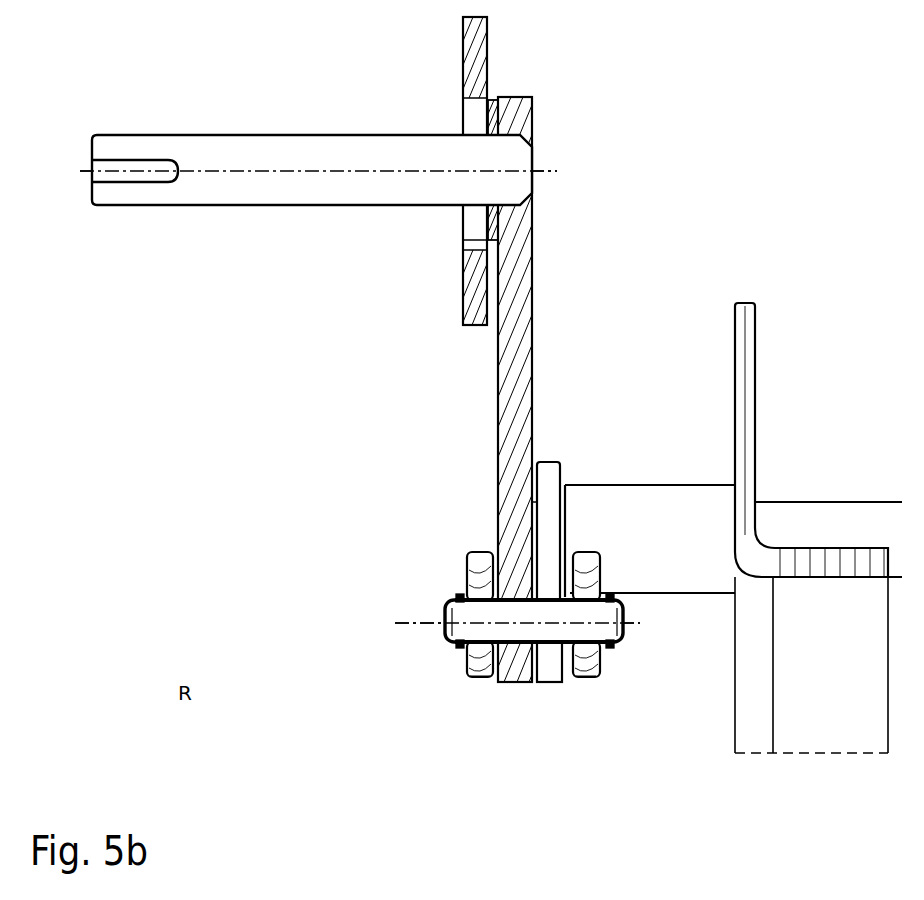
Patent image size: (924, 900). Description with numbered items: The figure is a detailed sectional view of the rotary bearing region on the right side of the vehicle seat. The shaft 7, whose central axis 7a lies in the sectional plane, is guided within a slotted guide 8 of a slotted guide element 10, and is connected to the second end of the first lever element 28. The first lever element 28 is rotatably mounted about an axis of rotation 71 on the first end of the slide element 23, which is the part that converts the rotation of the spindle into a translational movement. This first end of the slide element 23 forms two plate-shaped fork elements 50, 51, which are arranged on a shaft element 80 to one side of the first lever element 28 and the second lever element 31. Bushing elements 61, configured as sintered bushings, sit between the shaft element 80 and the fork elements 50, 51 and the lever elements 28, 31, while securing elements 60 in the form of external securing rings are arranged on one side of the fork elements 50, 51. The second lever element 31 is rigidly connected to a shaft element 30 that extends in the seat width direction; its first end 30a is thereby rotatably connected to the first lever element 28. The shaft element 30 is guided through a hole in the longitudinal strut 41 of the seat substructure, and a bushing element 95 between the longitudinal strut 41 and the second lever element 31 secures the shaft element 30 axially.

The shaft 7 is at (236, 152).
The central axis 7a is at (233, 178).
The slotted guide 8 is at (478, 103).
The slotted guide element 10 is at (470, 293).
The first lever element 28 is at (501, 400).
The second lever element 31 is at (550, 483).
The bushing elements 61 is at (548, 582).
The securing elements 60 is at (467, 666).
The slide element 23 is at (476, 682).
The shaft element 80 is at (454, 652).
The axis of rotation 71 is at (626, 627).
The fork element 50 is at (481, 684).
The fork element 51 is at (585, 680).
The bushing element 95 is at (630, 517).
The first end 30a is at (695, 512).
The shaft element 30 is at (872, 523).
The longitudinal strut 41 is at (748, 369).